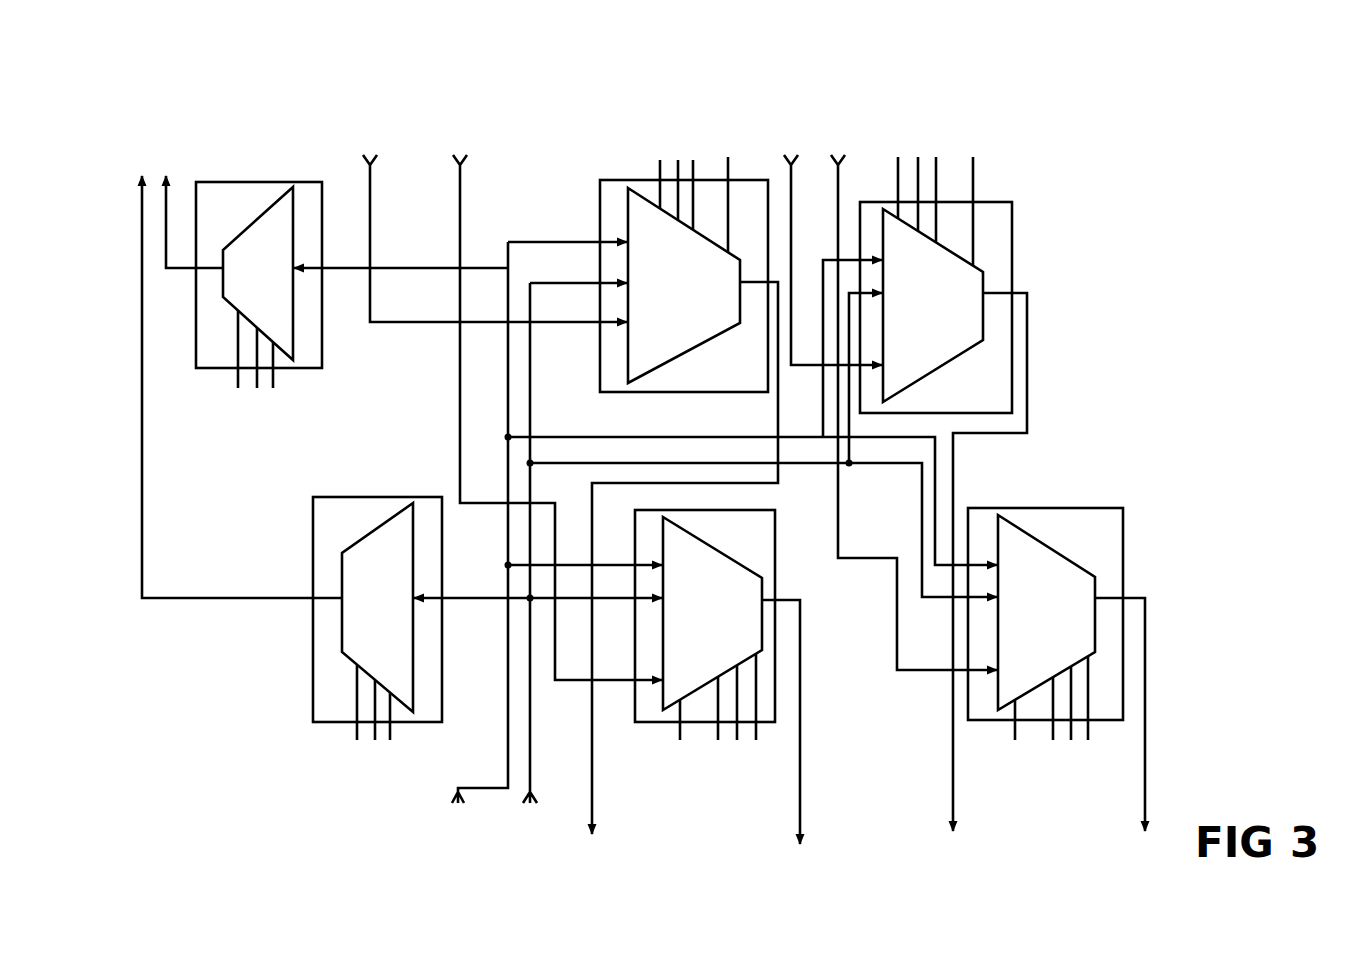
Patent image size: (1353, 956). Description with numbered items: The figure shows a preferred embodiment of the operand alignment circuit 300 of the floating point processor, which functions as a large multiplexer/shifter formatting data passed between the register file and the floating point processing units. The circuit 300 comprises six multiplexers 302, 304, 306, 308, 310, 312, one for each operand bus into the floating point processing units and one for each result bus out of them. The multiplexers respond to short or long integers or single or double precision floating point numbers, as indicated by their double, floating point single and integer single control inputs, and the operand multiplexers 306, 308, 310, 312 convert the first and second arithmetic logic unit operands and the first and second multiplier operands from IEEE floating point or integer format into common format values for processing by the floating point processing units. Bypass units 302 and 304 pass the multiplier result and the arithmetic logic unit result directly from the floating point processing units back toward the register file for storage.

The operand alignment circuit 300 is at (1177, 163).
The bypass unit multiplexer 302 is at (243, 214).
The bypass unit multiplexer 304 is at (362, 526).
The multiplexer 306 is at (767, 226).
The multiplexer 308 is at (763, 537).
The multiplexer 310 is at (998, 401).
The multiplexer 312 is at (1115, 536).